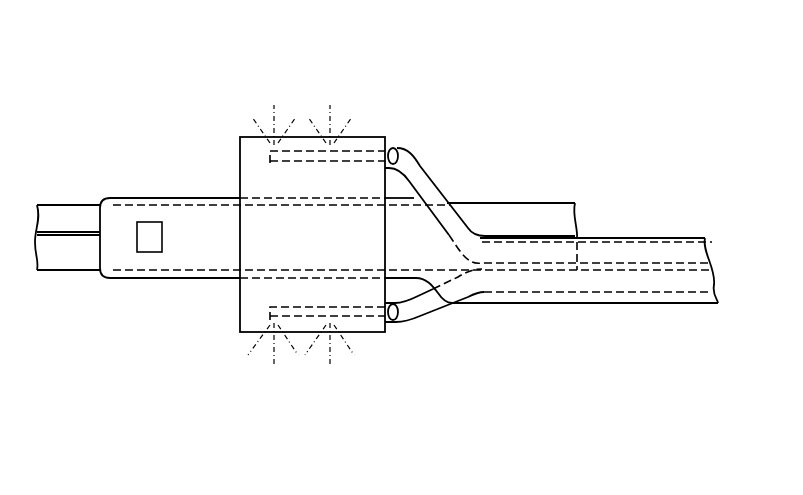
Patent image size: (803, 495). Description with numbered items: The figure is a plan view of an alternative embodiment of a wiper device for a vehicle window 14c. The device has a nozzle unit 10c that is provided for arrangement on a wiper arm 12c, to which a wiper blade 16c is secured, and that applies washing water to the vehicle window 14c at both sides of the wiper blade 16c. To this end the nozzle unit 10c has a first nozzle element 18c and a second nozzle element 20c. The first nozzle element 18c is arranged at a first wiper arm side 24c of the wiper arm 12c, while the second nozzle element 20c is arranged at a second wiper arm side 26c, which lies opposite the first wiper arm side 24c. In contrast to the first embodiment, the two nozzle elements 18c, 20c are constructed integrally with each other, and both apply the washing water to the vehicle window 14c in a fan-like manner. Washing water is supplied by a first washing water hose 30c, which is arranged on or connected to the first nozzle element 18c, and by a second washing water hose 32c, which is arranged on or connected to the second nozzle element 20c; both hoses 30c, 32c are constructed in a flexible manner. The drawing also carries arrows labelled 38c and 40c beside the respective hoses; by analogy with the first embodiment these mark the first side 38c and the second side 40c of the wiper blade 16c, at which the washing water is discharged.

The nozzle unit 10c is at (270, 73).
The wiper arm 12c is at (172, 213).
The vehicle window 14c is at (117, 126).
The wiper blade 16c is at (58, 210).
The first nozzle element 18c is at (372, 145).
The second nozzle element 20c is at (368, 323).
The first wiper arm side 24c is at (200, 197).
The second wiper arm side 26c is at (200, 280).
The first washing water hose 30c is at (428, 191).
The second washing water hose 32c is at (424, 312).
The first light path 38c is at (465, 124).
The second light path 40c is at (468, 391).